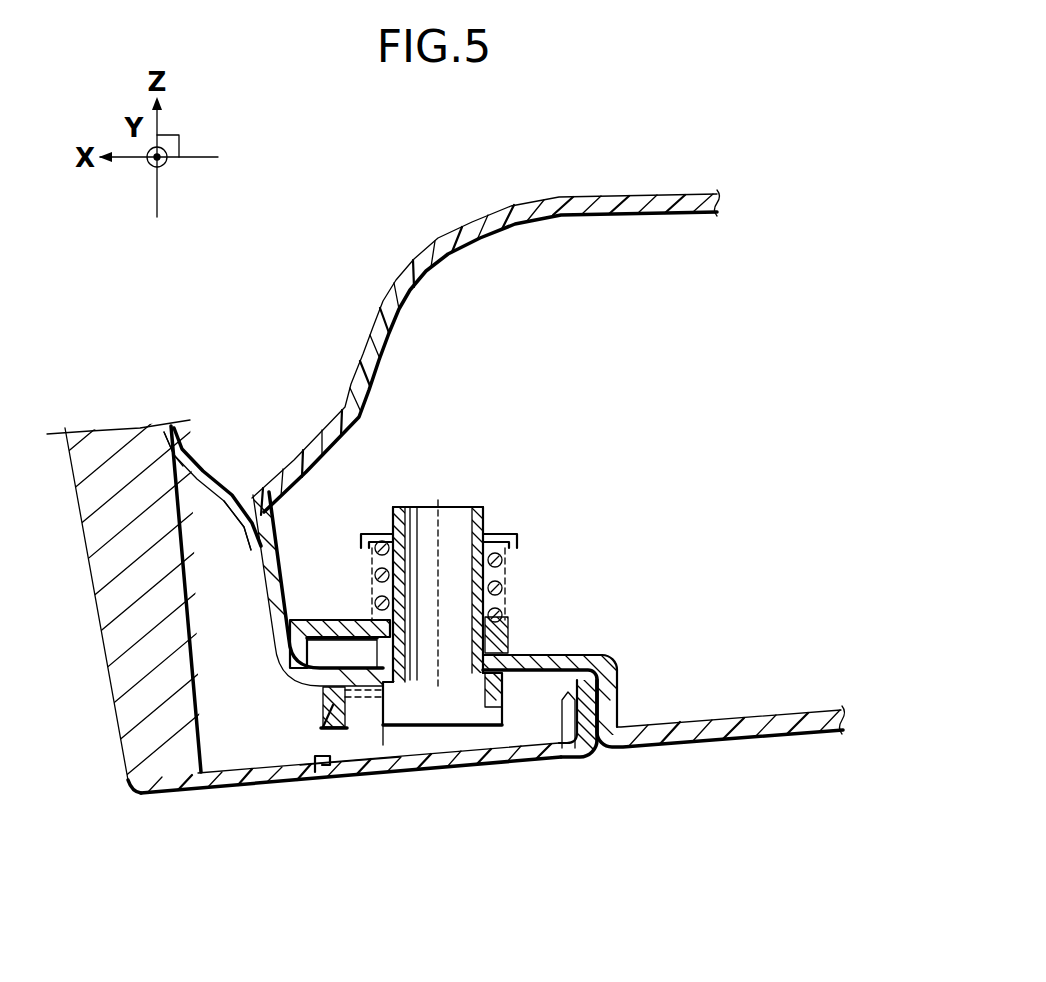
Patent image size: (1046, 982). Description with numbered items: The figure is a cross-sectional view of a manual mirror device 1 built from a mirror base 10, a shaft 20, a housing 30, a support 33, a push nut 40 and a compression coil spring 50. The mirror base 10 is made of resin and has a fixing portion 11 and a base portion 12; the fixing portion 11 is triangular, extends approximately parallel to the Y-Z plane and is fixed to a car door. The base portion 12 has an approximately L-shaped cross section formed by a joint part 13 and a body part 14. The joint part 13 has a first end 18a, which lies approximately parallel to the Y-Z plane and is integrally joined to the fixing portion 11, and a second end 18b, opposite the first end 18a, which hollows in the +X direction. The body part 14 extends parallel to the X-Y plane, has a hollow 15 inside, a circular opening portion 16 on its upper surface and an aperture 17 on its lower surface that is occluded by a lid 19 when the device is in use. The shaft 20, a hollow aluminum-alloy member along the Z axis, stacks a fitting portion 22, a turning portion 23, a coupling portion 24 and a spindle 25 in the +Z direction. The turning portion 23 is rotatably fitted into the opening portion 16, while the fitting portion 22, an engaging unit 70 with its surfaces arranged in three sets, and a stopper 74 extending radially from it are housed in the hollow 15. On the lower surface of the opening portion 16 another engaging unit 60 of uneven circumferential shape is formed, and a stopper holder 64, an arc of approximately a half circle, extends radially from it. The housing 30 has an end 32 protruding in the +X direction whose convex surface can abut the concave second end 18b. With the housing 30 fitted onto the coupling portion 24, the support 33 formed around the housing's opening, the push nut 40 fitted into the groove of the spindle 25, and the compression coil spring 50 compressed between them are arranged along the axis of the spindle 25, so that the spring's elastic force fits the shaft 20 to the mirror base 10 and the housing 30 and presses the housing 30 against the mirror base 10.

The manual mirror device 1 is at (330, 311).
The mirror base 10 is at (284, 601).
The fixing portion 11 is at (171, 803).
The base portion 12 is at (251, 800).
The joint part 13 is at (184, 458).
The body part 14 is at (305, 655).
The hollow 15 is at (386, 742).
The opening portion 16 is at (358, 690).
The aperture 17 is at (336, 778).
The first end 18a is at (157, 610).
The second end 18b is at (226, 530).
The lid 19 is at (437, 782).
The shaft 20 is at (455, 492).
The fitting portion 22 is at (360, 742).
The turning portion 23 is at (387, 748).
The coupling portion 24 is at (508, 632).
The spindle 25 is at (490, 503).
The housing 30 is at (618, 646).
The end 32 is at (269, 530).
The support 33 is at (512, 654).
The push nut 40 is at (516, 538).
The compression coil spring 50 is at (506, 560).
The engaging unit 60 is at (540, 700).
The stopper holder 64 is at (320, 720).
The engaging unit 70 is at (512, 735).
The stopper 74 is at (586, 690).